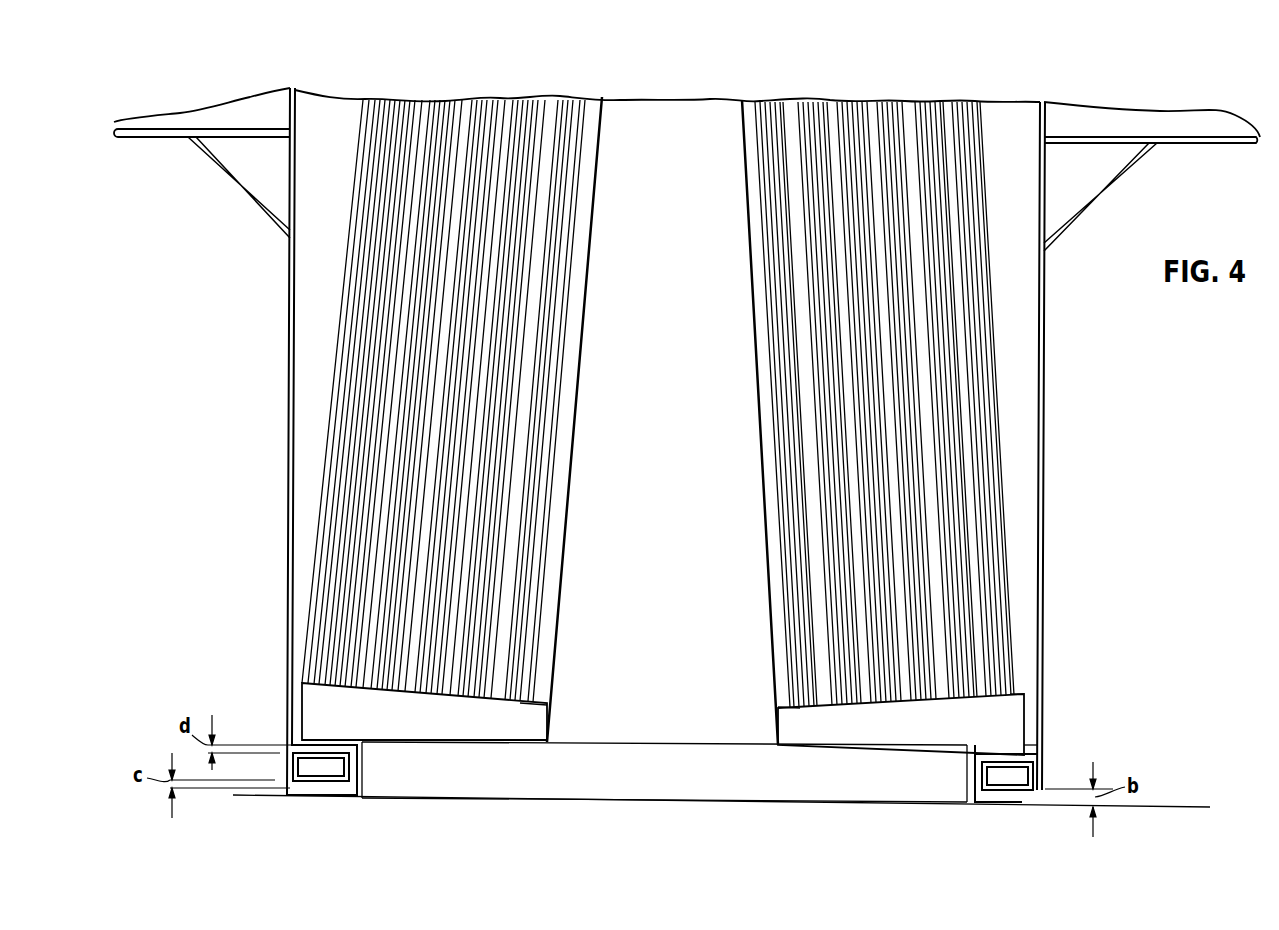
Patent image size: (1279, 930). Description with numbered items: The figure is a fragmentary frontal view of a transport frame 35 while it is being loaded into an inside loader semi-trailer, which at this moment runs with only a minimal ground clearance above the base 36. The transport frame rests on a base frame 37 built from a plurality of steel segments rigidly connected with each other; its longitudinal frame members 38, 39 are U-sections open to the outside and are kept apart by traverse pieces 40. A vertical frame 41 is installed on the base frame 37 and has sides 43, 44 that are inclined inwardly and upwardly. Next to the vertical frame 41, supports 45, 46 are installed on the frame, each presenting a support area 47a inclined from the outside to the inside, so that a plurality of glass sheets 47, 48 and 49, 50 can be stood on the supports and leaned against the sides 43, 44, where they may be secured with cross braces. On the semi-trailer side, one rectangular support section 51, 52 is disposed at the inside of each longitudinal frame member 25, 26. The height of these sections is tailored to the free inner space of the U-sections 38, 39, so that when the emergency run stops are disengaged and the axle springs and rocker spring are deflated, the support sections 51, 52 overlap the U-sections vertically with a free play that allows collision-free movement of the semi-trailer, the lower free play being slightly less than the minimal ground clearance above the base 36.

The longitudinal frame member 25 is at (289, 468).
The longitudinal frame member 26 is at (1045, 478).
The transport frame 35 is at (1048, 722).
The base 36 is at (1148, 807).
The base frame 37 is at (450, 800).
The longitudinal frame member 38 is at (967, 775).
The longitudinal frame member 39 is at (362, 778).
The traverse piece 40 is at (712, 785).
The vertical frame 41 is at (632, 722).
The side 43 is at (800, 710).
The side 44 is at (522, 705).
The support 45 is at (1003, 717).
The support 46 is at (317, 700).
The glass sheet 47 is at (980, 378).
The support area 47a is at (1017, 692).
The glass sheet 48 is at (940, 313).
The glass sheet 49 is at (350, 355).
The glass sheet 50 is at (395, 298).
The support section 51 is at (323, 770).
The support section 52 is at (1008, 777).